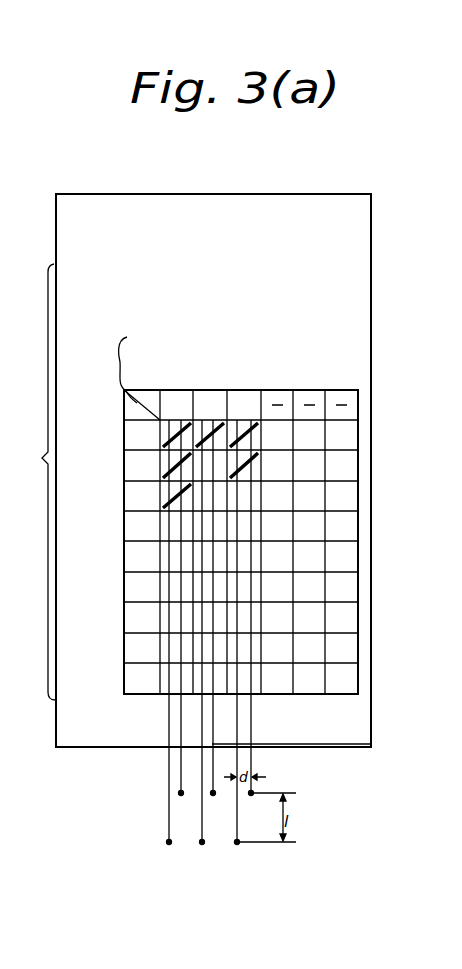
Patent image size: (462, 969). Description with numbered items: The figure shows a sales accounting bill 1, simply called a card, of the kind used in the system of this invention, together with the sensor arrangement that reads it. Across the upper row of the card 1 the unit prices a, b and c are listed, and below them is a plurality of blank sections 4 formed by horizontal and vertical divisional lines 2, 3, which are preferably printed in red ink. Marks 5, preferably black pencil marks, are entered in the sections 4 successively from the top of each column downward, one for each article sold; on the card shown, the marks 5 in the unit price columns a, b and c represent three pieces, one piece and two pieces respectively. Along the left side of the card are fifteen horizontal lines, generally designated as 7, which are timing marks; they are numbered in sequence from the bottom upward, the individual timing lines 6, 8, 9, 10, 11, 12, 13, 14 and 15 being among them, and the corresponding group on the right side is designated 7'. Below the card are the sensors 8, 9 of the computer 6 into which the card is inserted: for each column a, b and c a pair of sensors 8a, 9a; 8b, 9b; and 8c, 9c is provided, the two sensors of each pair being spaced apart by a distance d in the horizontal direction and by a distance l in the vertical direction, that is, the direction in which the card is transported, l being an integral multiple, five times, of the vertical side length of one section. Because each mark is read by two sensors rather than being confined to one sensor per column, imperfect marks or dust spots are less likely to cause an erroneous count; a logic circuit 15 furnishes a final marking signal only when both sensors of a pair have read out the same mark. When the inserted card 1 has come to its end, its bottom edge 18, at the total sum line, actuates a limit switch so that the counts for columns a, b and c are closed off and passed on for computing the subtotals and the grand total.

The sales accounting bill 1 is at (226, 189).
The blank sections 4 is at (348, 563).
The marks 5 is at (184, 493).
The timing marks 7 is at (70, 481).
The print lines group (right side) 7' is at (450, 461).
The sensor 8a is at (182, 618).
The sensor 8b is at (216, 618).
The sensor 8c is at (253, 618).
The sensor 9a is at (167, 643).
The sensor 9b is at (203, 643).
The sensor 9c is at (238, 643).
The bottom edge 18 is at (110, 746).
The horizontal divisional lines 2 is at (118, 663).
The vertical divisional lines 3 is at (118, 632).
The computer 6 is at (118, 541).
The sensors 8 is at (118, 480).
The sensors 9 is at (118, 450).
The print line 10 is at (118, 420).
The print line 11 is at (118, 388).
The print line 12 is at (118, 358).
The print line 13 is at (118, 328).
The print line 14 is at (118, 298).
The logic circuit 15 is at (118, 268).